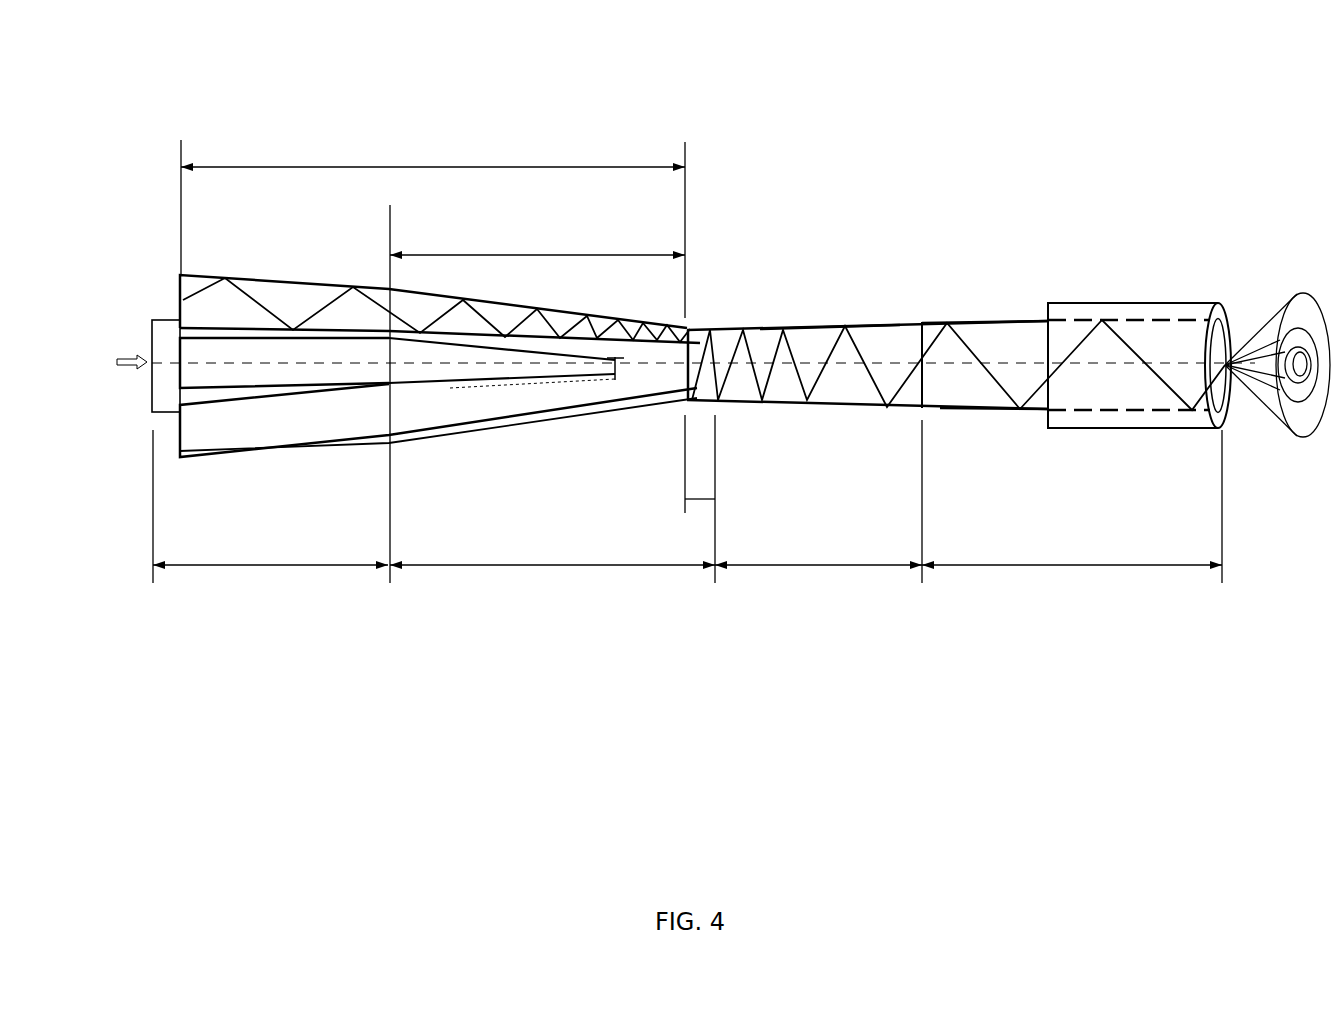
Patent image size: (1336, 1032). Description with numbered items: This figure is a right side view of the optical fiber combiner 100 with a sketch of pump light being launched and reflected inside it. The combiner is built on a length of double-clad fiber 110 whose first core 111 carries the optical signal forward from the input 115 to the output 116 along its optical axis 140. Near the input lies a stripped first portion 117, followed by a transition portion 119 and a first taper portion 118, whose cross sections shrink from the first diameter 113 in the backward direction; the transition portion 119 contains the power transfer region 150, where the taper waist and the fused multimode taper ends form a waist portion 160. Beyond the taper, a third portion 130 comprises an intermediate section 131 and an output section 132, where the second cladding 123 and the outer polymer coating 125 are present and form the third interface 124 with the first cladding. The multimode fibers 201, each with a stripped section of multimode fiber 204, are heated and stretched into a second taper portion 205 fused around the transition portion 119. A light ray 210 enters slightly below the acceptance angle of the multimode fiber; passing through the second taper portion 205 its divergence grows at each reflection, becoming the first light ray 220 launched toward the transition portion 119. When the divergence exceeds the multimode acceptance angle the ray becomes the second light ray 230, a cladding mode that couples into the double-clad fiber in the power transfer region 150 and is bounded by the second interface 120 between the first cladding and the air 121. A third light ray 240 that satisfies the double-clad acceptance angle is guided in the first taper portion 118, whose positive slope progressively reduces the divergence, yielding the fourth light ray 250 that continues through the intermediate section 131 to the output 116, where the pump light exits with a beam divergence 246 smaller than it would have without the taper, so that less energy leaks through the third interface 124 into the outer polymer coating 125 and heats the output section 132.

The optical fiber combiner 100 is at (723, 178).
The length of double-clad fiber 110 is at (160, 312).
The first core 111 is at (155, 378).
The first diameter 113 is at (925, 322).
The input 115 is at (127, 355).
The output 116 is at (1250, 348).
The first portion 117 is at (266, 568).
The first taper portion 118 is at (818, 568).
The transition portion 119 is at (527, 568).
The second interface 120 is at (820, 322).
The air 121 is at (843, 320).
The second cladding 123 is at (1048, 303).
The third interface 124 is at (1143, 413).
The outer polymer coating 125 is at (1077, 303).
The third portion 130 is at (1075, 568).
The intermediate section 131 is at (990, 323).
The output section 132 is at (1127, 303).
The optical axis 140 is at (218, 365).
The power transfer region 150 is at (700, 502).
The waist portion 160 is at (692, 385).
The multimode fibers 201 is at (303, 275).
The section of multimode fiber 204 is at (440, 165).
The second taper portion 205 is at (540, 253).
The light ray 210 is at (207, 288).
The first light ray 220 is at (522, 316).
The second light ray 230 is at (693, 392).
The third light ray 240 is at (800, 408).
The beam divergence 246 is at (1250, 382).
The fourth light ray 250 is at (990, 410).